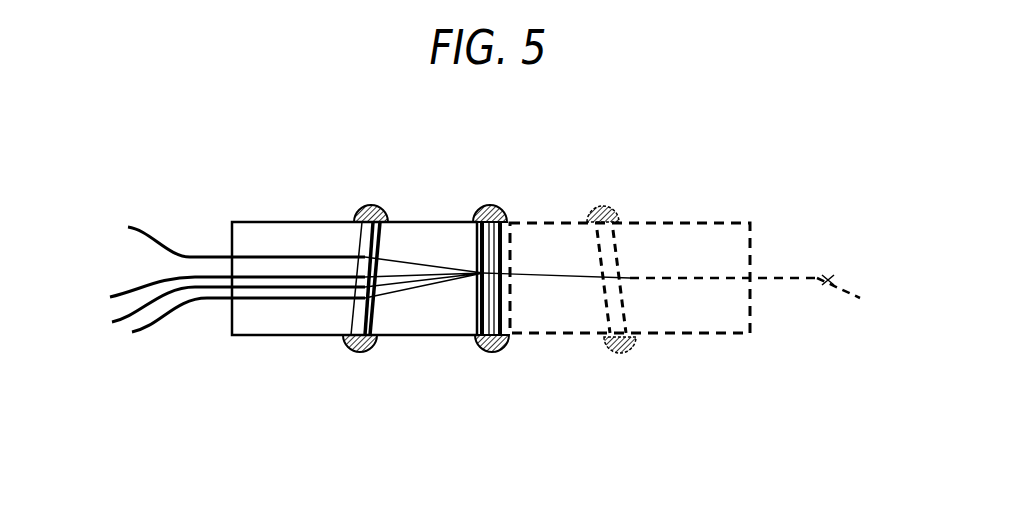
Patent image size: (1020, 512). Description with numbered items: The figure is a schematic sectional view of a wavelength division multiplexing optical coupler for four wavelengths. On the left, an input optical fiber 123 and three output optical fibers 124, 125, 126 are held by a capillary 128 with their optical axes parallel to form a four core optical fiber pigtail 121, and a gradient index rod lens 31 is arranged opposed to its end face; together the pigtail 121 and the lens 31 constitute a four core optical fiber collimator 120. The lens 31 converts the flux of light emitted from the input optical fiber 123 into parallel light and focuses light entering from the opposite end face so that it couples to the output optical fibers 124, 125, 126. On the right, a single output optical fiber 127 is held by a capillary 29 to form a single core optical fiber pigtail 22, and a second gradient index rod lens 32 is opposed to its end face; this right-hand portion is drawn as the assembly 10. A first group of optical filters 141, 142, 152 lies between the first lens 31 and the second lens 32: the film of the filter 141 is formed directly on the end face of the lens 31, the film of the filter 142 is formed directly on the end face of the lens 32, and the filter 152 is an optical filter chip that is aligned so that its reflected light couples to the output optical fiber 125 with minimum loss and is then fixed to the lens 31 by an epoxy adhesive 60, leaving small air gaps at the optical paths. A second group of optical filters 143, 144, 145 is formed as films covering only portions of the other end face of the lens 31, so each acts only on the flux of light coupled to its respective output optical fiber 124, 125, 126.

The optical connector 10 is at (520, 417).
The single core optical fiber pigtail 22 is at (630, 357).
The capillary 29 is at (697, 230).
The gradient index rod lens 31 is at (408, 235).
The gradient index rod lens 32 is at (577, 226).
The epoxy adhesive 60 is at (492, 207).
The 4 core optical fiber collimator 120 is at (202, 417).
The 4 core optical fiber pigtail 121 is at (192, 360).
The input optical fiber 123 is at (185, 253).
The output optical fiber 124 is at (120, 288).
The output optical fiber 125 is at (123, 317).
The output optical fiber 126 is at (180, 303).
The output optical fiber 127 is at (828, 280).
The capillary 128 is at (248, 232).
The optical filter 141 is at (478, 250).
The optical filter 142 is at (510, 250).
The optical filter 143 is at (365, 240).
The optical filter 144 is at (380, 289).
The optical filter 145 is at (369, 296).
The optical filter chip 152 is at (508, 298).